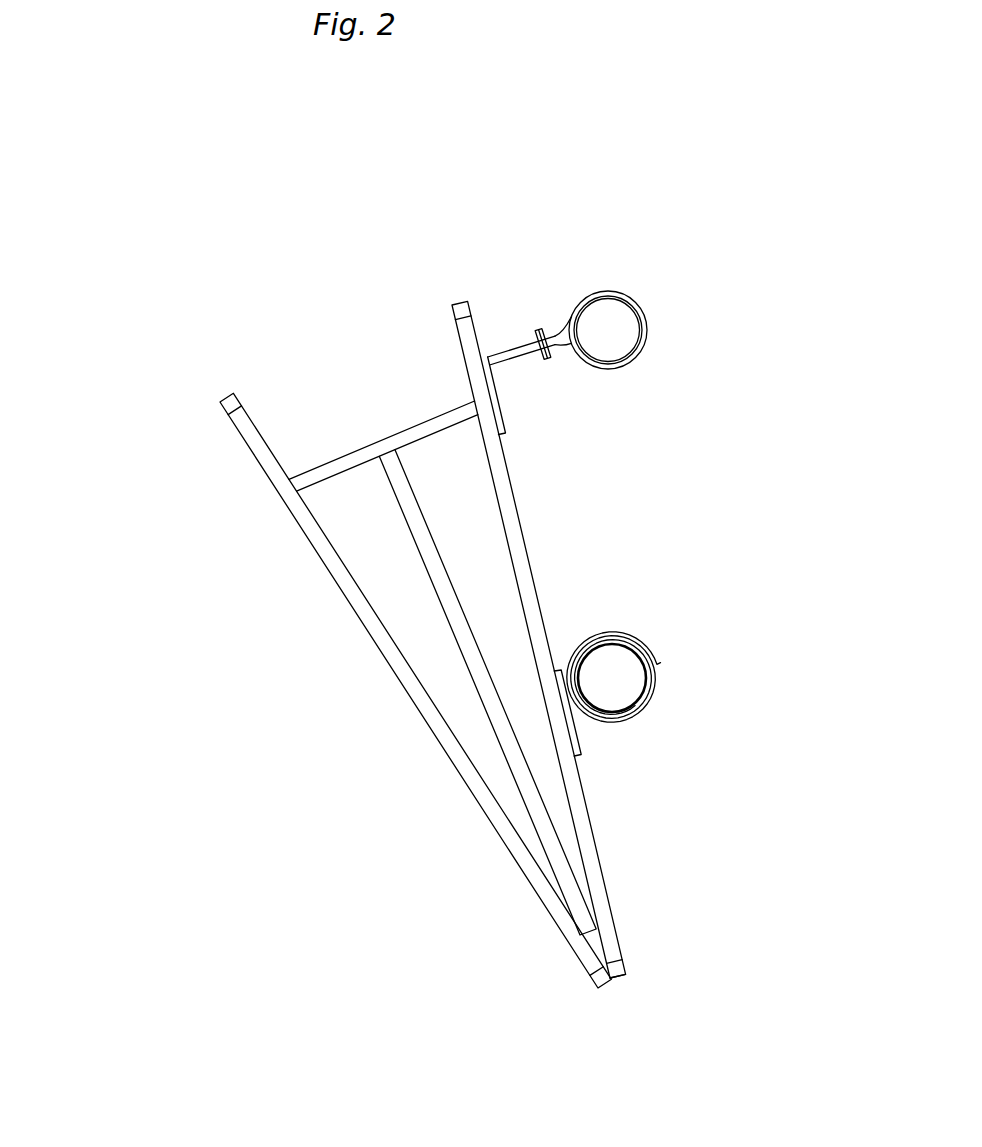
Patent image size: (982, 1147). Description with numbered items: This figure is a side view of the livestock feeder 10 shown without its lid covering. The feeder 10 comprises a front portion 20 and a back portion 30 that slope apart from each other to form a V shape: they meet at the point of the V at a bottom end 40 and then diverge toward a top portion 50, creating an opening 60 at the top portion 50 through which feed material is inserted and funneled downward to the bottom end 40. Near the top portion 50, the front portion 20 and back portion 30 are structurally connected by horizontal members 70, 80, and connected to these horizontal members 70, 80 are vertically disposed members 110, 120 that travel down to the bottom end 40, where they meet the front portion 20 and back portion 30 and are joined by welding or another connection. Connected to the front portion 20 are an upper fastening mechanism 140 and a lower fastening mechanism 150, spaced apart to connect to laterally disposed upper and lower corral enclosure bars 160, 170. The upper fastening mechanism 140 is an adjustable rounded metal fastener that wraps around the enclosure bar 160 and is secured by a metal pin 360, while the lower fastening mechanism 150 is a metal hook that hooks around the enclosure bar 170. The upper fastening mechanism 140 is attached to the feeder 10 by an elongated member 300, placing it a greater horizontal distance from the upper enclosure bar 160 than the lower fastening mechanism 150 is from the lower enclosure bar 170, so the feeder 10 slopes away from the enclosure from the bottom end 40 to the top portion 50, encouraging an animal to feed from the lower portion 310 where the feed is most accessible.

The livestock feeder 10 is at (773, 158).
The front portion 20 is at (514, 497).
The back portion 30 is at (301, 527).
The bottom end 40 is at (617, 938).
The top portion 50 is at (232, 425).
The opening 60 is at (278, 371).
The horizontal member 70 is at (398, 433).
The horizontal member 80 is at (383, 446).
The vertically disposed member 110 is at (450, 580).
The vertically disposed member 120 is at (487, 692).
The upper fastening mechanism 140 is at (578, 312).
The lower fastening mechanism 150 is at (657, 662).
The upper corral enclosure bar 160 is at (647, 322).
The lower corral enclosure bar 170 is at (638, 708).
The elongated member 300 is at (508, 353).
The lower portion 310 is at (598, 843).
The metal pin 360 is at (541, 331).